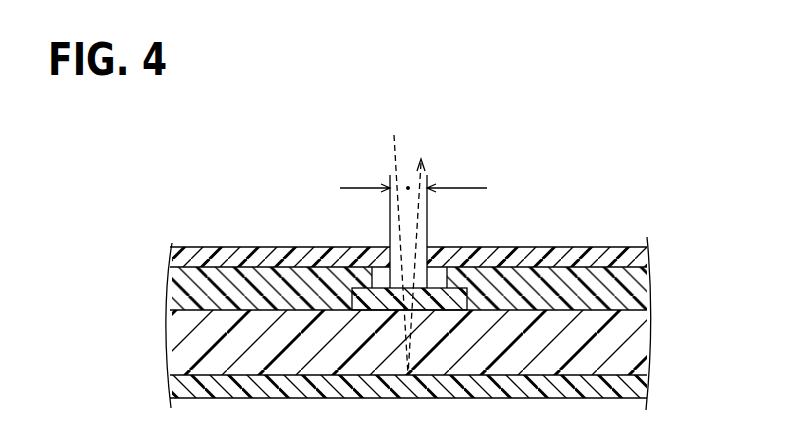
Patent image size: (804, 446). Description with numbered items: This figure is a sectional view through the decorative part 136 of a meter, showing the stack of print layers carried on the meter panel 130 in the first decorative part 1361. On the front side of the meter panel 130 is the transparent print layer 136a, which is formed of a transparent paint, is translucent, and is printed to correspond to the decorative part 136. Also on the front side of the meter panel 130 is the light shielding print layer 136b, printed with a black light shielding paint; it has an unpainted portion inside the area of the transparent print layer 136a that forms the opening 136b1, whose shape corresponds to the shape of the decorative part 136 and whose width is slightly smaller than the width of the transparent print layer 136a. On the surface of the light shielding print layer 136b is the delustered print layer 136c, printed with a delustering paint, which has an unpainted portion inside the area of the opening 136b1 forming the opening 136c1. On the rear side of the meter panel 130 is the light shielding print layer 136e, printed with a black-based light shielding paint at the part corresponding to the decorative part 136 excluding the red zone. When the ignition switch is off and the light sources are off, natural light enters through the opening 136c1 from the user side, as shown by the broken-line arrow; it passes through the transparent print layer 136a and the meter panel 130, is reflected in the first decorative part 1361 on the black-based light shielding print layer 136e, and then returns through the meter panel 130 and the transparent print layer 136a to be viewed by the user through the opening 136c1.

The decorative part 136 is at (408, 188).
The first decorative part 1361 is at (413, 188).
The transparent print layer 136a is at (452, 302).
The light shielding print layer 136b is at (627, 283).
The opening 136b1 is at (375, 283).
The delustered print layer 136c is at (617, 256).
The opening 136c1 is at (428, 266).
The light shielding print layer 136e is at (625, 389).
The meter panel 130 is at (630, 349).